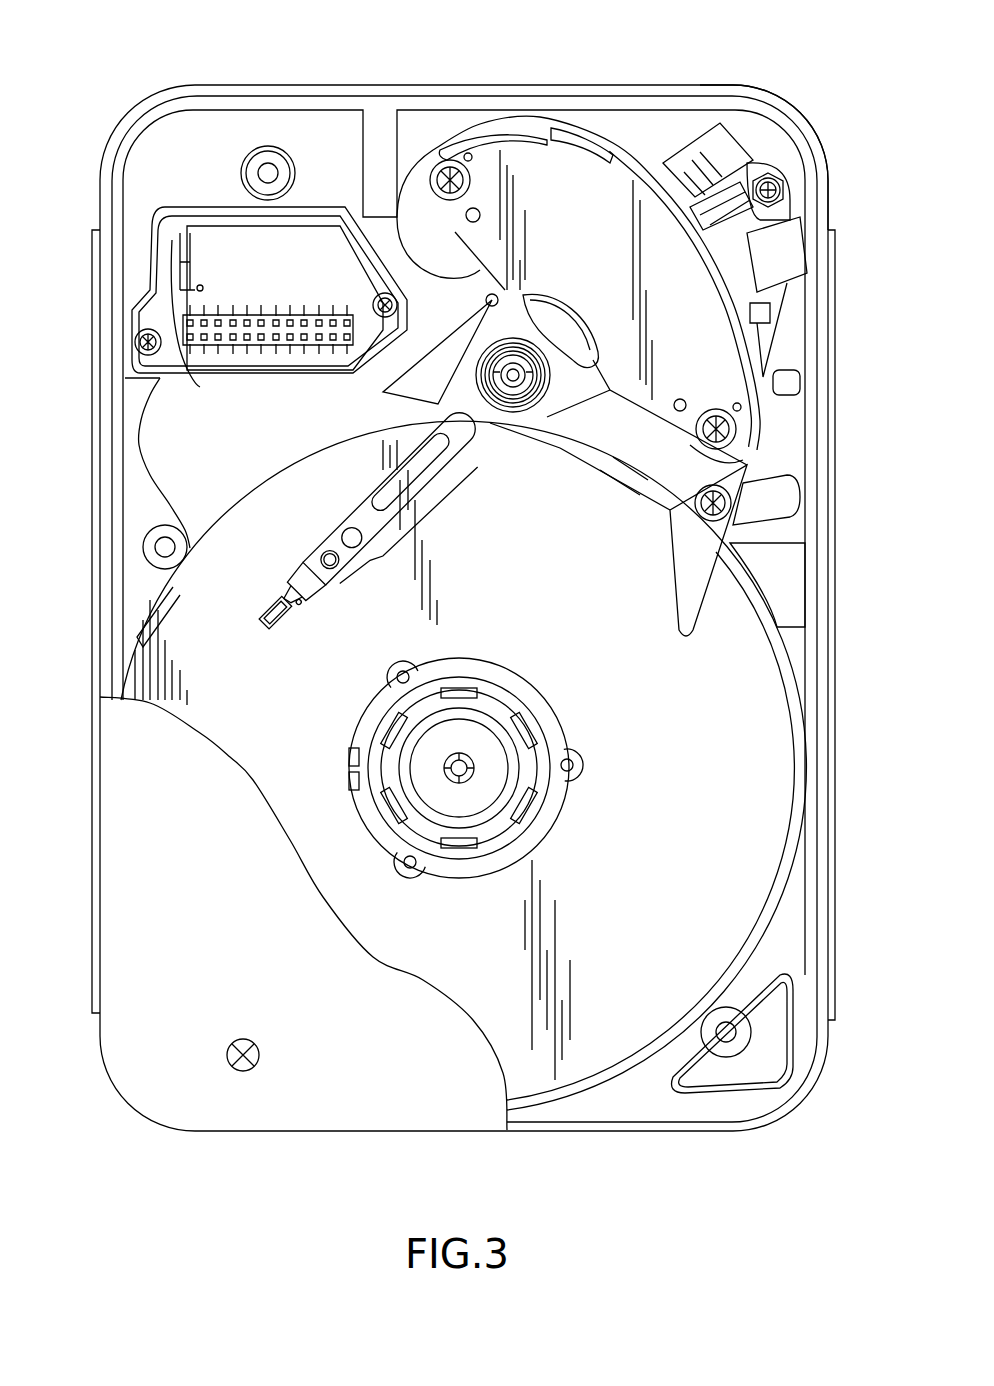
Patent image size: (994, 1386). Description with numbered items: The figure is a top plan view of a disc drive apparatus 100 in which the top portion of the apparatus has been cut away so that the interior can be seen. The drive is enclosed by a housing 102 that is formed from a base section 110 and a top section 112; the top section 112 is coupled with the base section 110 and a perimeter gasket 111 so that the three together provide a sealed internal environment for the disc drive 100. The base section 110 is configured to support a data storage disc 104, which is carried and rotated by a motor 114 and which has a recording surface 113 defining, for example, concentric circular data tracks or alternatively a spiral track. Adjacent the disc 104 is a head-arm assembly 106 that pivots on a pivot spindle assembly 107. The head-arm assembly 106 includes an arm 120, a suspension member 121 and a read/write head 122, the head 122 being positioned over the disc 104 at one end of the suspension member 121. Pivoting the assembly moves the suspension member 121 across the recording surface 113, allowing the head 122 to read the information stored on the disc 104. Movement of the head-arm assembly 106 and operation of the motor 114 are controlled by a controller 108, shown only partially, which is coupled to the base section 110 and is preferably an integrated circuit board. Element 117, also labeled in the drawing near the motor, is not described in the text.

The disc drive apparatus 100 is at (505, 46).
The housing 102 is at (97, 953).
The data storage disc 104 is at (806, 769).
The head-arm assembly 106 is at (625, 180).
The pivot spindle assembly 107 is at (515, 382).
The controller 108 is at (190, 327).
The base section 110 is at (143, 505).
The perimeter gasket 111 is at (742, 83).
The top section 112 is at (320, 1125).
The recording surface 113 is at (792, 846).
The motor 114 is at (497, 768).
The spindle motor 117 is at (512, 826).
The arm 120 is at (373, 481).
The suspension member 121 is at (345, 587).
The read/write head 122 is at (275, 628).